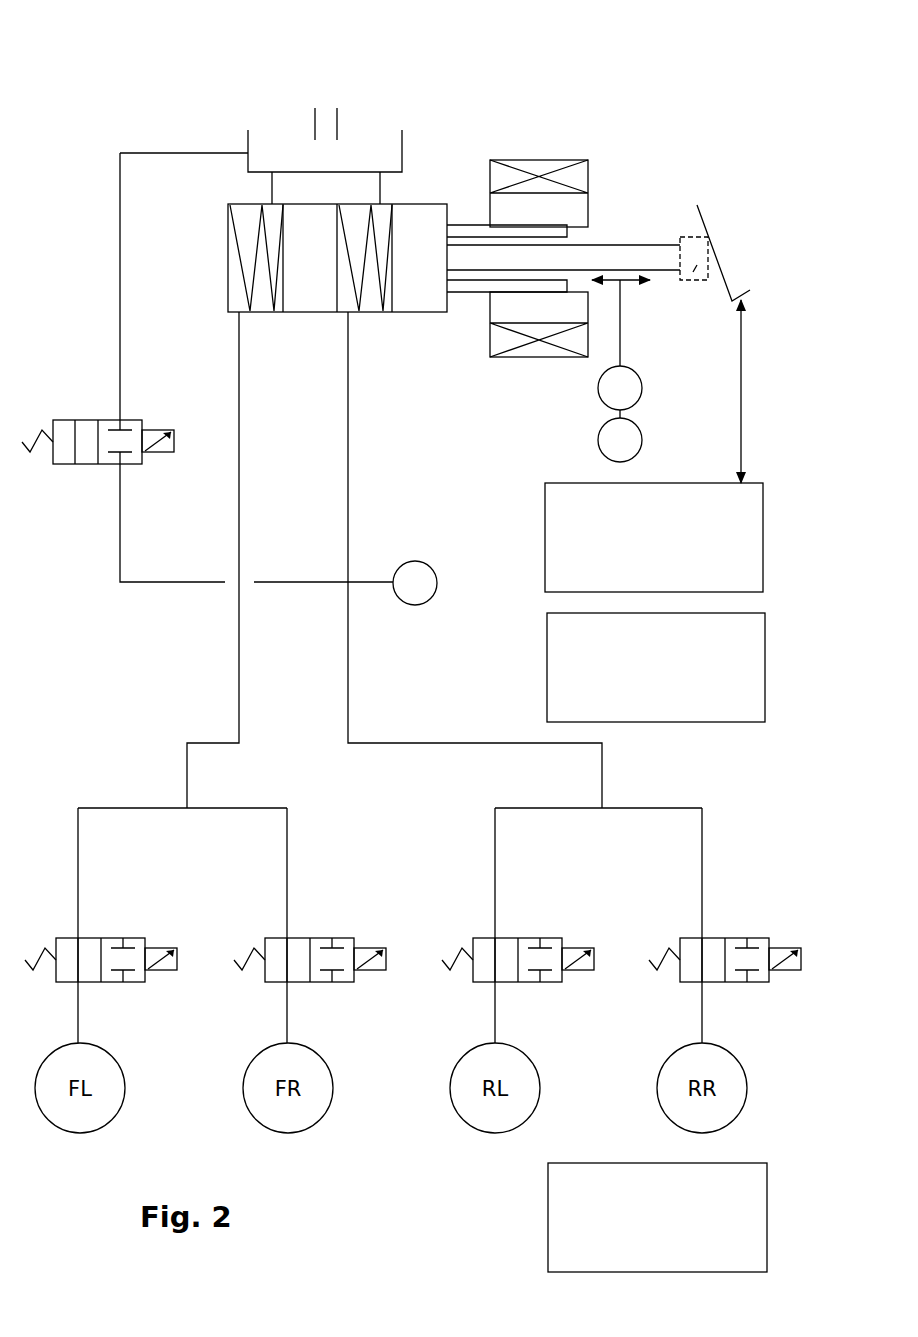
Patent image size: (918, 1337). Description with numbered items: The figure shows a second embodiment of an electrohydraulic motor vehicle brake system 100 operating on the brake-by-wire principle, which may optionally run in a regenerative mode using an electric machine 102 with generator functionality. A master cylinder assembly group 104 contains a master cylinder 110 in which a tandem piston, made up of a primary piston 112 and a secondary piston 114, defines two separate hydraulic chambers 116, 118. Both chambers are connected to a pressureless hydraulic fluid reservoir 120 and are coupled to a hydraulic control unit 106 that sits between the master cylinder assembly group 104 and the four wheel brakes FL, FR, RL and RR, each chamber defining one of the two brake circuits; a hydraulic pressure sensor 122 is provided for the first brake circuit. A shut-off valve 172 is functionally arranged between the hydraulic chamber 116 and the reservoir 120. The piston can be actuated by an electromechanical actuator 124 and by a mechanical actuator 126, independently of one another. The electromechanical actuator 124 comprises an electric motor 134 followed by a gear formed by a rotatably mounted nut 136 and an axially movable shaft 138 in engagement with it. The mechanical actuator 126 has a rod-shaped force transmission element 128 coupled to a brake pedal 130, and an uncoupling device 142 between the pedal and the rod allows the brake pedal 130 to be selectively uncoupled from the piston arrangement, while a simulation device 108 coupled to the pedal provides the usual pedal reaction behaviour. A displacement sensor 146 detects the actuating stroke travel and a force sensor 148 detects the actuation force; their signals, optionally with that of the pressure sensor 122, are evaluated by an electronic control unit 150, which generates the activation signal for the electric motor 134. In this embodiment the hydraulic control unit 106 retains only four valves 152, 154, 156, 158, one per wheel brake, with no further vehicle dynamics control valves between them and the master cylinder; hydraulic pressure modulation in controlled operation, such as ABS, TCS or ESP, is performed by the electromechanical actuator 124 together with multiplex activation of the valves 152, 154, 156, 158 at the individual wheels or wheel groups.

The hydraulic motor vehicle brake system 100 is at (84, 29).
The electric machine 102 is at (548, 1207).
The master cylinder assembly group 104 is at (427, 95).
The hydraulic control unit 106 is at (143, 772).
The simulation device 108 is at (545, 540).
The master cylinder 110 is at (363, 345).
The primary piston 112 is at (436, 271).
The secondary piston 114 is at (320, 271).
The hydraulic chamber 116 is at (348, 302).
The hydraulic chamber 118 is at (237, 300).
The pressureless hydraulic fluid reservoir 120 is at (293, 152).
The hydraulic pressure sensor 122 is at (430, 567).
The electromechanical actuator 124 is at (522, 147).
The mechanical actuator 126 is at (695, 173).
The force transmission element 128 is at (620, 258).
The brake pedal 130 is at (720, 265).
The electric motor 134 is at (533, 342).
The nut 136 is at (587, 208).
The shaft 138 is at (468, 295).
The uncoupling device 142 is at (697, 265).
The displacement sensor 146 is at (637, 397).
The force sensor 148 is at (637, 438).
The electronic control unit 150 is at (547, 657).
The valve 152 is at (147, 938).
The valve 154 is at (355, 938).
The valve 156 is at (560, 938).
The valve 158 is at (767, 938).
The valve 172 is at (143, 420).